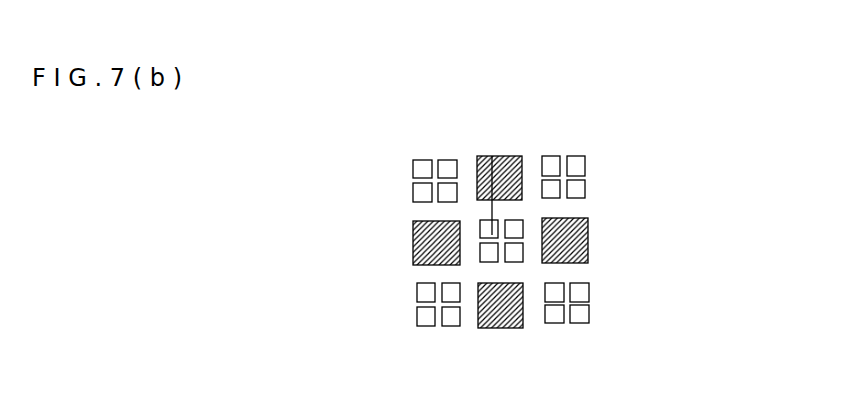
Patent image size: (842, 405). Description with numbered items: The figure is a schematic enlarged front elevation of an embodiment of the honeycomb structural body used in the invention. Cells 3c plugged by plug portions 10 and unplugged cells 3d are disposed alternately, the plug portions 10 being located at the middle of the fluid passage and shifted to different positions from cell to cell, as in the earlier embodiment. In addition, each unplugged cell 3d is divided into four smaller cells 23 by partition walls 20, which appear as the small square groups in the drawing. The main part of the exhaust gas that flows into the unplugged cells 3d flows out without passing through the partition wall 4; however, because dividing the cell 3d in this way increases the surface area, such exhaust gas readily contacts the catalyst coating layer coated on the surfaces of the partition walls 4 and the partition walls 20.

The plugged portion 10 is at (478, 176).
The partition wall 20 is at (502, 158).
The smaller cell 23 is at (490, 253).
The cell 3c is at (522, 177).
The cell 3d is at (520, 239).
The partition wall 4 is at (507, 273).